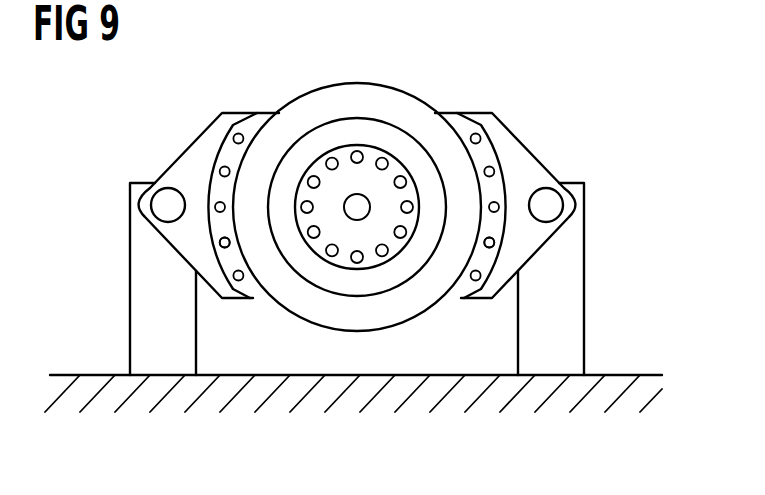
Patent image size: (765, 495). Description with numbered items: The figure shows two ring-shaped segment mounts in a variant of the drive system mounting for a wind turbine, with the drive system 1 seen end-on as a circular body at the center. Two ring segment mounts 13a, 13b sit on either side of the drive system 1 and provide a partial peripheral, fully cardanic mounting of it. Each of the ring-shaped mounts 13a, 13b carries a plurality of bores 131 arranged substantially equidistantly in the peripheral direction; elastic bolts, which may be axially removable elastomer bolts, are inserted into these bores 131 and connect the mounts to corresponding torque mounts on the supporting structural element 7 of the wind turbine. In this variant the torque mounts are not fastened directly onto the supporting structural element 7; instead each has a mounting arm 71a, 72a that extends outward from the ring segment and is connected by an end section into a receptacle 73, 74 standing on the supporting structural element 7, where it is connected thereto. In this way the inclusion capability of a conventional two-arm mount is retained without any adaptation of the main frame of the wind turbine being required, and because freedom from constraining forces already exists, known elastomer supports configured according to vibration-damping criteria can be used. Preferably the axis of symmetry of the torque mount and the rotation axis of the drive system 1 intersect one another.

The electric machine / motor housing 1 is at (362, 106).
The ring segment mount 13a is at (260, 128).
The ring segment mount 13b is at (453, 125).
The mounting arm 71a is at (182, 157).
The mounting arm 72a is at (533, 158).
The bores 131 is at (224, 242).
The receptacle 73 is at (128, 318).
The receptacle 74 is at (584, 318).
The supporting structural element 7 is at (420, 405).